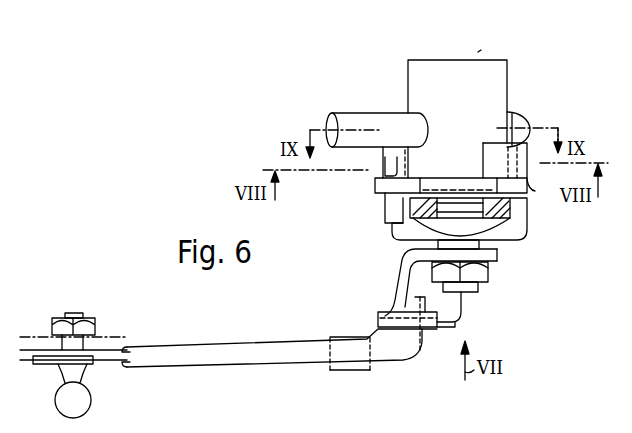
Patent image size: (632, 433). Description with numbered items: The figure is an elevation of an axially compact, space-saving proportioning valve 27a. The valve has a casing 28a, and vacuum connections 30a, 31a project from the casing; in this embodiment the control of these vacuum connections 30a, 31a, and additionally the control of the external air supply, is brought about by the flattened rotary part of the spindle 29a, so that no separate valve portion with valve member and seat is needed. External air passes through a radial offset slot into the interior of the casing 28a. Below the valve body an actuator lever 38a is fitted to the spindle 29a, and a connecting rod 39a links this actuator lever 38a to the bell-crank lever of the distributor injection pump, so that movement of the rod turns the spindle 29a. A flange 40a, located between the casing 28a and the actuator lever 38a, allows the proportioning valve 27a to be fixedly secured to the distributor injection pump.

The proportioning valve 27a is at (479, 52).
The proportioning valve casing 28a is at (489, 91).
The spindle 29a is at (448, 218).
The vacuum connection 30a is at (366, 122).
The vacuum connection 31a is at (519, 117).
The actuator lever 38a is at (405, 282).
The connecting rod 39a is at (216, 362).
The flange 40a is at (388, 192).